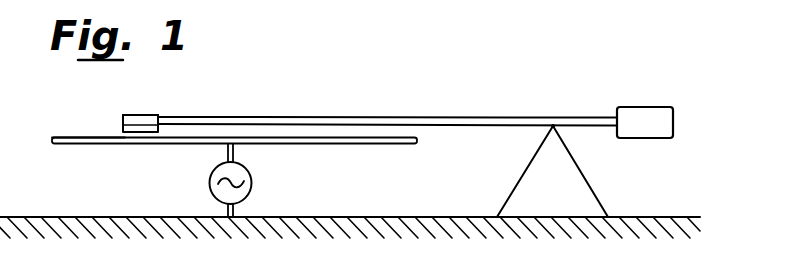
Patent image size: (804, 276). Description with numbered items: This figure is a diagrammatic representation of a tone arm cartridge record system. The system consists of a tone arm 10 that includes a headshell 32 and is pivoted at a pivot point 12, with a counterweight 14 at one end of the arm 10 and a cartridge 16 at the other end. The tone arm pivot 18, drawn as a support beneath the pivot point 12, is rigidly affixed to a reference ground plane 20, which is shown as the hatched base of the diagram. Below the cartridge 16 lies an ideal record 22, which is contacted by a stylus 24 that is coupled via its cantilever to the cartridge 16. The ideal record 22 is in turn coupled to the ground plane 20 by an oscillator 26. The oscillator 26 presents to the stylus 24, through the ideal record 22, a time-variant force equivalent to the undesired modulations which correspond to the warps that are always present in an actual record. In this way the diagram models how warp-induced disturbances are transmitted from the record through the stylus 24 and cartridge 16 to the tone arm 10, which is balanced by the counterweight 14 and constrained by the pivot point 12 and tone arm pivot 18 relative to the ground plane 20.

The tone arm 10 is at (405, 113).
The pivot point 12 is at (551, 128).
The counterweight 14 is at (641, 107).
The cartridge 16 is at (142, 127).
The tone arm pivot 18 is at (576, 191).
The reference ground plane 20 is at (77, 215).
The ideal record 22 is at (365, 147).
The stylus 24 is at (117, 137).
The oscillator 26 is at (251, 170).
The headshell 32 is at (130, 115).